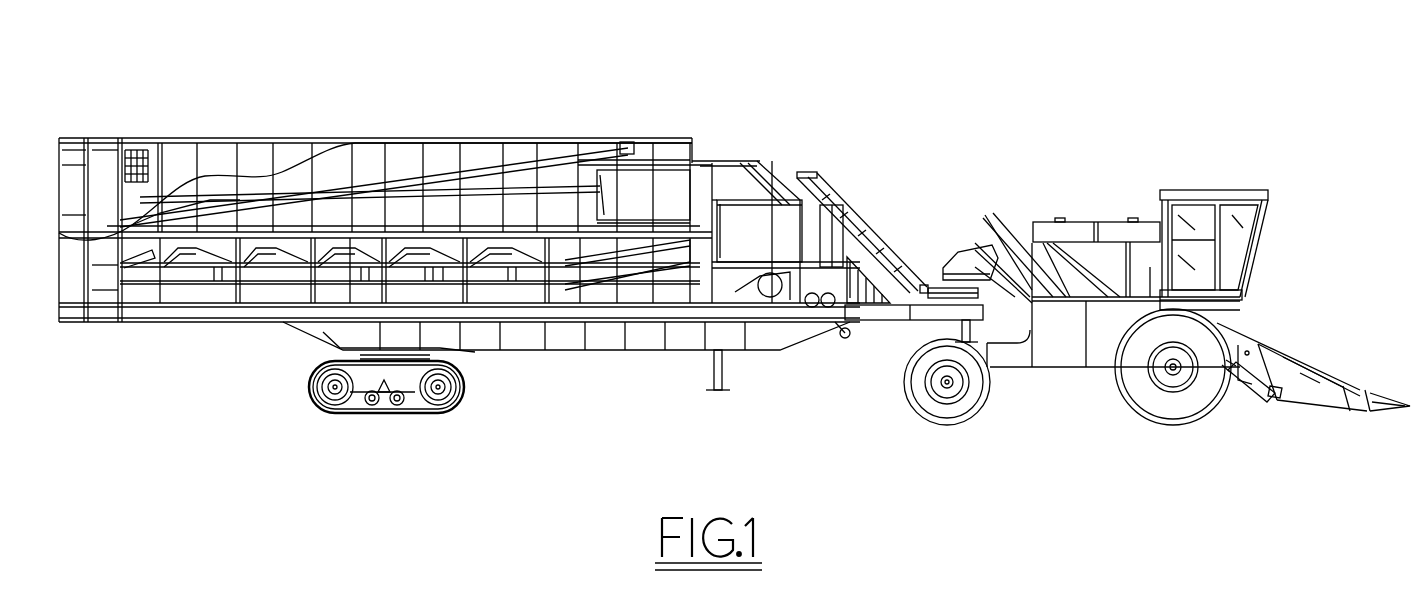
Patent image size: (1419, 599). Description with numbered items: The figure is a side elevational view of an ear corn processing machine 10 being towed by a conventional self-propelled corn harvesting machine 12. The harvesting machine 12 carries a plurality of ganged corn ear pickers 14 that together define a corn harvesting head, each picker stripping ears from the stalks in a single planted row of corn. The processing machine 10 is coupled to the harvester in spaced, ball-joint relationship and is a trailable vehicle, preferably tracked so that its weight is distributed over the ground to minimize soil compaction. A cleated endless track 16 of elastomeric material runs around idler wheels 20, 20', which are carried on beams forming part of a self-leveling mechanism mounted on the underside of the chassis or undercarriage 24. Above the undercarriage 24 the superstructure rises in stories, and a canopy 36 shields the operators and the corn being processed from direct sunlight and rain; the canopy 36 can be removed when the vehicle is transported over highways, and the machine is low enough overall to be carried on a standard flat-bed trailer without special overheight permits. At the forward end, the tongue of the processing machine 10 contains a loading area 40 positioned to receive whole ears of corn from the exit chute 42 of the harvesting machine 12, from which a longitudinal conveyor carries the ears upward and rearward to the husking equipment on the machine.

The ear corn processing machine 10 is at (336, 60).
The self-propelled corn harvesting machine 12 is at (1117, 83).
The corn ear pickers 14 is at (1296, 382).
The cleated endless track 16 is at (424, 414).
The idler wheel 20 is at (469, 389).
The idler wheel 20' is at (302, 389).
The chassis or undercarriage 24 is at (610, 343).
The canopy 36 is at (182, 153).
The loading area 40 is at (937, 287).
The exit chute 42 is at (951, 257).